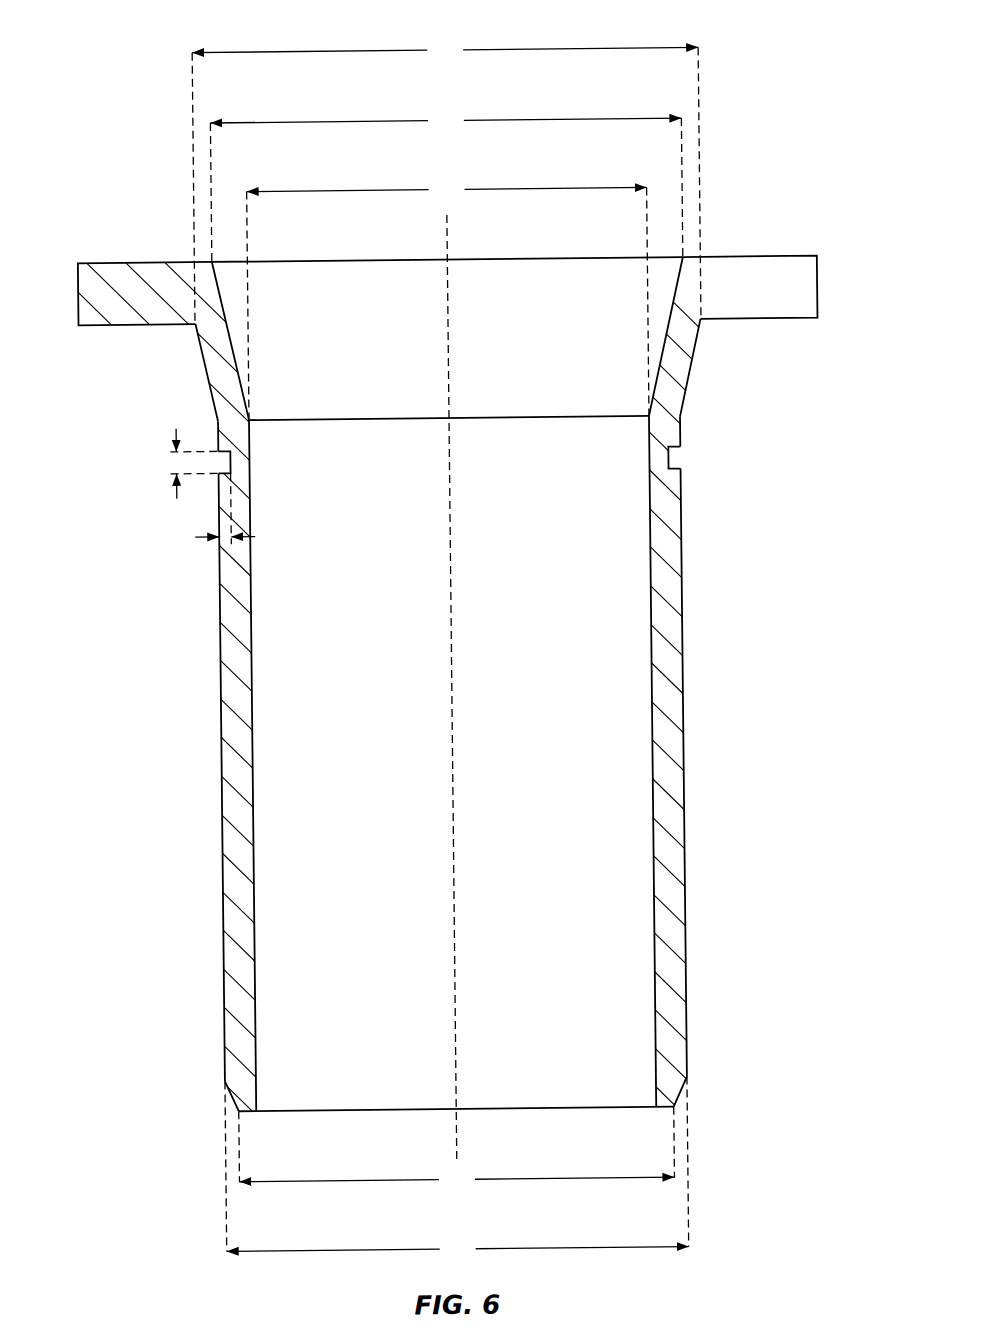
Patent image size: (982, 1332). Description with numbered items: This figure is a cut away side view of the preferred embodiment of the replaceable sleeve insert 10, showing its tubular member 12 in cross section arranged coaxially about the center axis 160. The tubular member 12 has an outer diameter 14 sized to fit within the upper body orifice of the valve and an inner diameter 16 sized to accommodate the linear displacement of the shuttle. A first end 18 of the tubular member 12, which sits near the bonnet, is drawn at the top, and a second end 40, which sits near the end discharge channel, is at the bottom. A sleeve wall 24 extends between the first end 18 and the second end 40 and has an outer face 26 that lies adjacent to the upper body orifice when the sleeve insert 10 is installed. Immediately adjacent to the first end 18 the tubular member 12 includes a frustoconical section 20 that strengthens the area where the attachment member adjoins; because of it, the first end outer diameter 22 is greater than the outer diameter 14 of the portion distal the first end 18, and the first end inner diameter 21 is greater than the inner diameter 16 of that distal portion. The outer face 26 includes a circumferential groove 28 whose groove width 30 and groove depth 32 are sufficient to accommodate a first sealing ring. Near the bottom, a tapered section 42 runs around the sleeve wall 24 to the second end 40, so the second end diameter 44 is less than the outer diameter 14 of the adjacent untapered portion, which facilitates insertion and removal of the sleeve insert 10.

The replaceable sleeve insert 10 is at (142, 42).
The tubular member 12 is at (681, 634).
The outer diameter 14 is at (457, 1171).
The inner diameter 16 is at (447, 297).
The first end 18 is at (187, 257).
The frustoconical section 20 is at (675, 363).
The first end inner diameter 21 is at (446, 184).
The first end outer diameter 22 is at (446, 179).
The sleeve wall 24 is at (664, 692).
The outer face 26 is at (682, 559).
The circumferential groove 28 is at (672, 460).
The groove width 30 is at (176, 426).
The groove depth 32 is at (206, 536).
The second end 40 is at (316, 1110).
The tapered section 42 is at (223, 1086).
The second end diameter 44 is at (457, 1151).
The center axis 160 is at (449, 240).